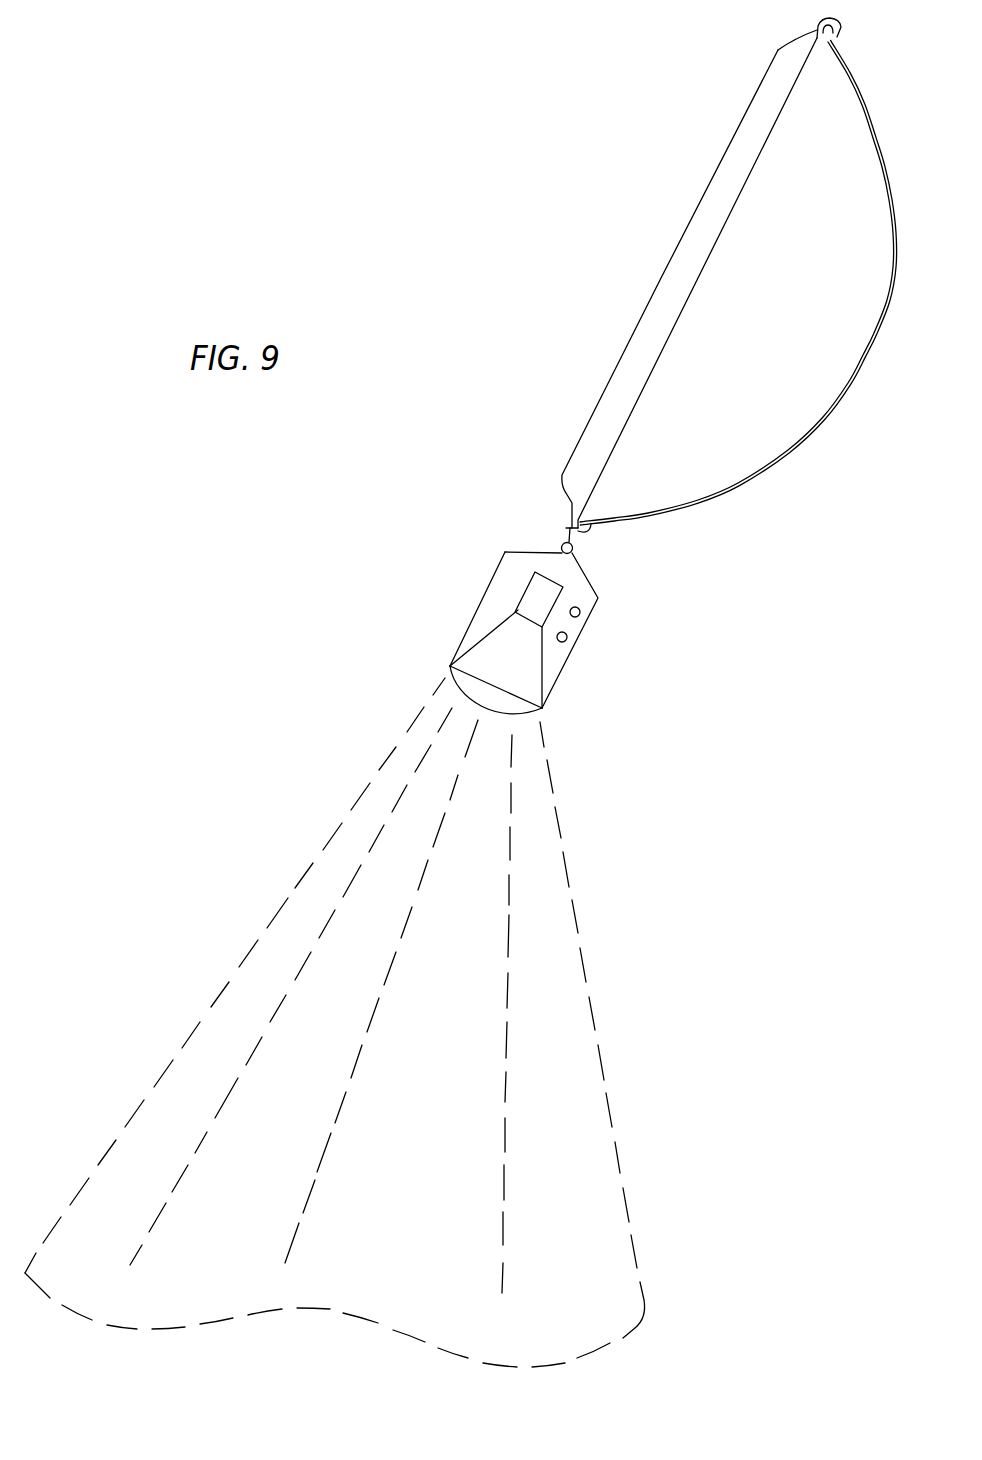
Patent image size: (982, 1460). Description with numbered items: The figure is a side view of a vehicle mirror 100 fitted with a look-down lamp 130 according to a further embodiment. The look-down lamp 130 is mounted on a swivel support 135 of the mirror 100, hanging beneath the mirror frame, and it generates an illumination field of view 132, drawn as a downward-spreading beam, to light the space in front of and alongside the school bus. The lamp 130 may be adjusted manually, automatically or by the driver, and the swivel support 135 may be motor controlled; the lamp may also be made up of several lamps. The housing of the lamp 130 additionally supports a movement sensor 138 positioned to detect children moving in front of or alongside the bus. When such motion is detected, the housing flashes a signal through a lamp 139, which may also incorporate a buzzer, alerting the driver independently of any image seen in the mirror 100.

The mirror 100 is at (762, 477).
The look-down lamp 130 is at (462, 623).
The illumination field of view 132 is at (303, 855).
The swivel support 135 is at (573, 553).
The movement sensor 138 is at (566, 640).
The lamp 139 is at (580, 615).